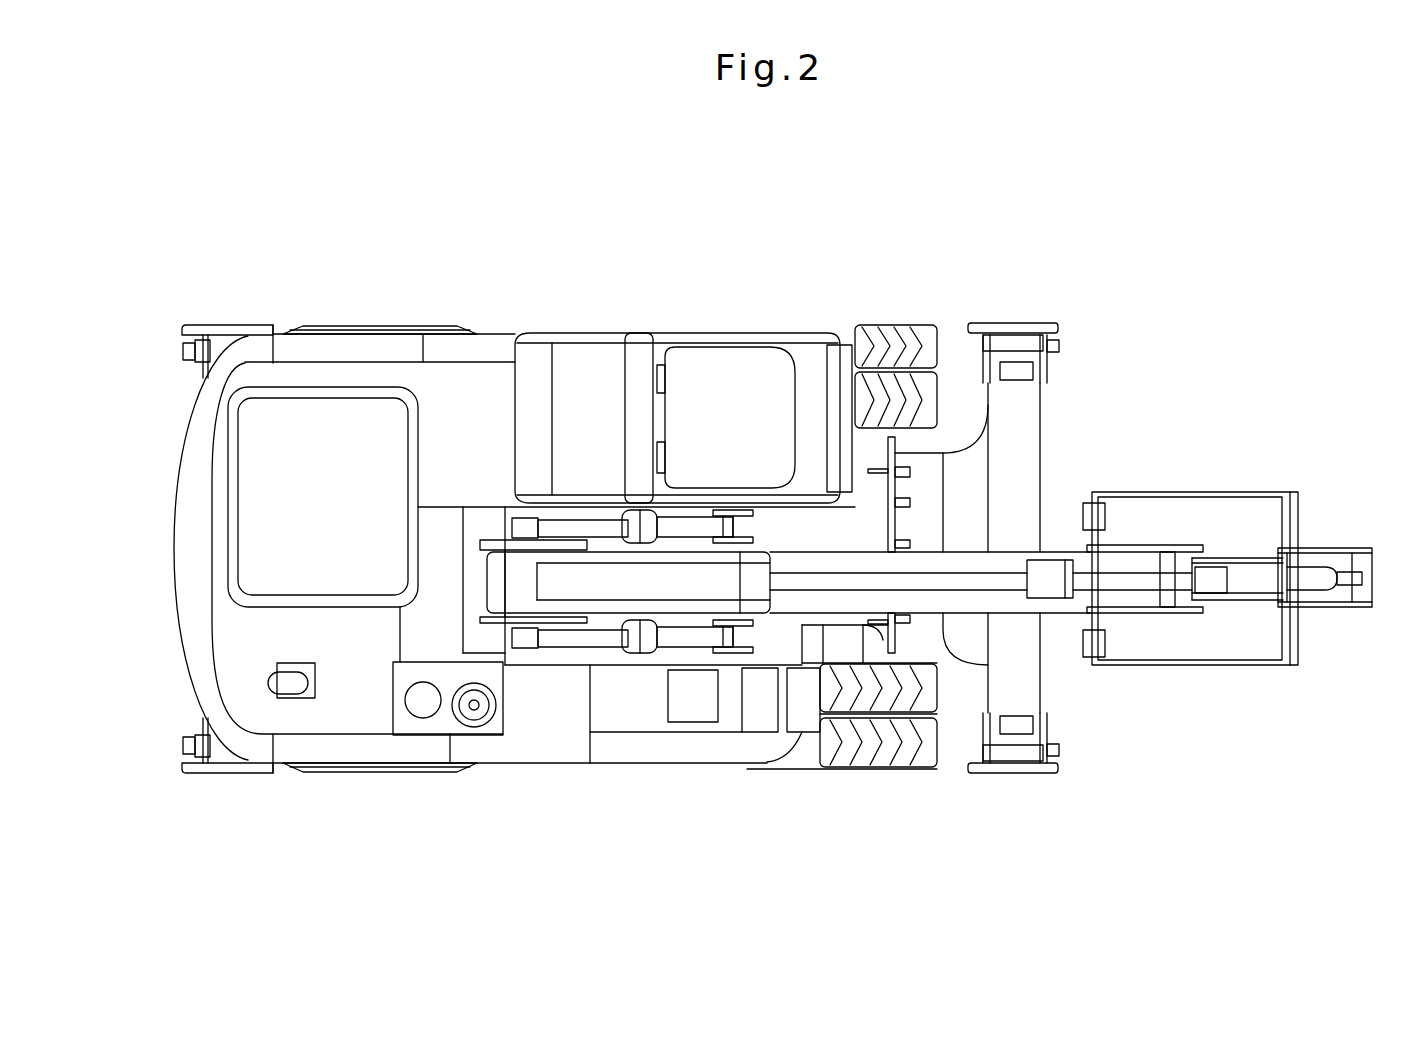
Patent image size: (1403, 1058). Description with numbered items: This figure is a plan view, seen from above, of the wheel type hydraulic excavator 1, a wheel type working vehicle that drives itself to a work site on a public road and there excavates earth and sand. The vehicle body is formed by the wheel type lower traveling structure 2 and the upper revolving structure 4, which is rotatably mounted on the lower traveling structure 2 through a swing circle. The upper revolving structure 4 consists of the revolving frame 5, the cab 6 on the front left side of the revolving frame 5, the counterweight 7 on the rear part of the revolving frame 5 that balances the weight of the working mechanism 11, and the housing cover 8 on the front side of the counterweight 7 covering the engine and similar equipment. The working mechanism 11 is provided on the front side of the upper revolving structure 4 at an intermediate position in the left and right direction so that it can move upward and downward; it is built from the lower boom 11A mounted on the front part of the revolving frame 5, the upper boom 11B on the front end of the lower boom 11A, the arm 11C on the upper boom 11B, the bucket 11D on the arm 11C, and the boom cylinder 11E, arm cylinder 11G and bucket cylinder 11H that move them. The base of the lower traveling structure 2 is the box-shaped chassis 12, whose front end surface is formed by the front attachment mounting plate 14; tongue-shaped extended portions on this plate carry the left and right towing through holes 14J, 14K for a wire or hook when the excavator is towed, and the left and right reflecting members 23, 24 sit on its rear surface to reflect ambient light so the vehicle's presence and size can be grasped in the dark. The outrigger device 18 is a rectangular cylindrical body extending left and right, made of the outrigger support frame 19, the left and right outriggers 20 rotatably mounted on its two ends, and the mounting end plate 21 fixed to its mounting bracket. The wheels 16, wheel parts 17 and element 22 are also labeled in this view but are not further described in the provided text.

The wheel type hydraulic excavator 1 is at (692, 296).
The wheel type lower traveling structure 2 is at (1064, 382).
The upper revolving structure 4 is at (518, 774).
The revolving frame 5 is at (763, 650).
The cab 6 is at (733, 382).
The counterweight 7 is at (178, 548).
The housing cover 8 is at (437, 385).
The working mechanism 11 is at (1238, 484).
The lower boom 11A is at (555, 620).
The upper boom 11B is at (700, 607).
The arm 11C is at (1312, 560).
The bucket 11D is at (1203, 670).
The boom cylinder 11E is at (600, 522).
The arm cylinder 11G is at (1048, 592).
The bucket cylinder 11H is at (1325, 585).
The chassis 12 is at (838, 644).
The front attachment mounting plate 14 is at (887, 518).
The towing through hole 14J is at (898, 442).
The towing through hole 14K is at (895, 628).
The tire 16 is at (868, 337).
The wheel 17 is at (380, 330).
The outrigger device 18 is at (247, 324).
The outrigger support frame 19 is at (1018, 456).
The outrigger 20 is at (214, 328).
The mounting end plate 21 is at (912, 470).
The bolt 22 is at (912, 503).
The left side reflecting member 23 is at (893, 440).
The right side reflecting member 24 is at (885, 705).